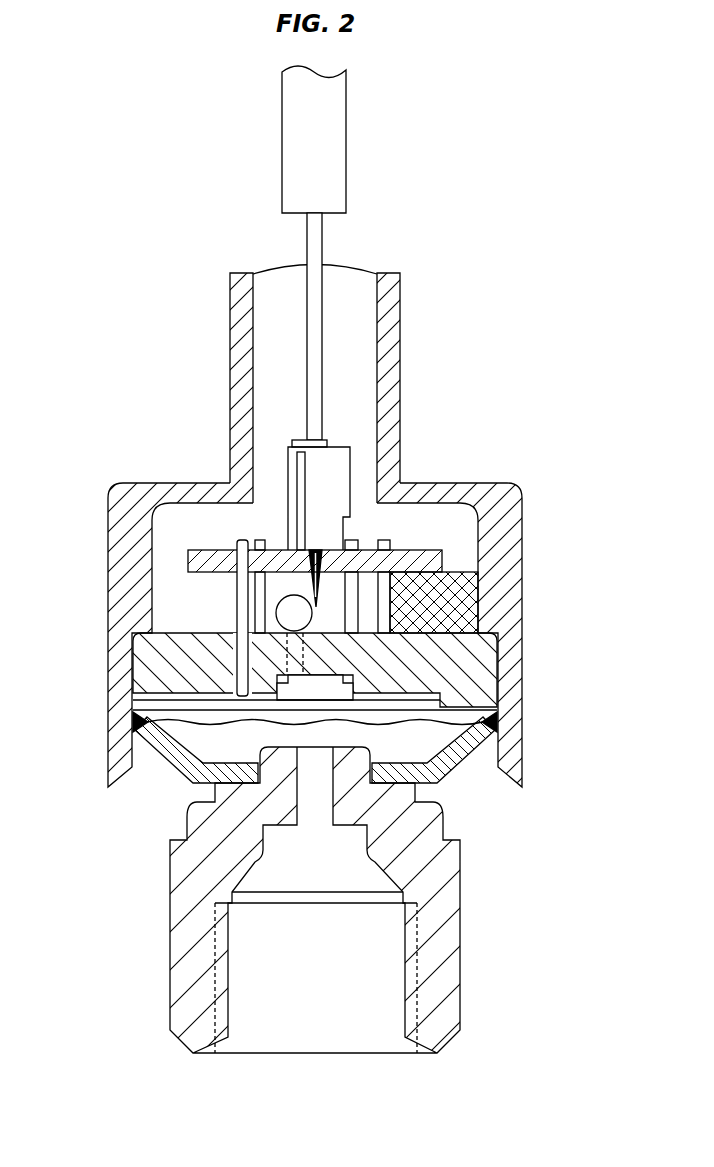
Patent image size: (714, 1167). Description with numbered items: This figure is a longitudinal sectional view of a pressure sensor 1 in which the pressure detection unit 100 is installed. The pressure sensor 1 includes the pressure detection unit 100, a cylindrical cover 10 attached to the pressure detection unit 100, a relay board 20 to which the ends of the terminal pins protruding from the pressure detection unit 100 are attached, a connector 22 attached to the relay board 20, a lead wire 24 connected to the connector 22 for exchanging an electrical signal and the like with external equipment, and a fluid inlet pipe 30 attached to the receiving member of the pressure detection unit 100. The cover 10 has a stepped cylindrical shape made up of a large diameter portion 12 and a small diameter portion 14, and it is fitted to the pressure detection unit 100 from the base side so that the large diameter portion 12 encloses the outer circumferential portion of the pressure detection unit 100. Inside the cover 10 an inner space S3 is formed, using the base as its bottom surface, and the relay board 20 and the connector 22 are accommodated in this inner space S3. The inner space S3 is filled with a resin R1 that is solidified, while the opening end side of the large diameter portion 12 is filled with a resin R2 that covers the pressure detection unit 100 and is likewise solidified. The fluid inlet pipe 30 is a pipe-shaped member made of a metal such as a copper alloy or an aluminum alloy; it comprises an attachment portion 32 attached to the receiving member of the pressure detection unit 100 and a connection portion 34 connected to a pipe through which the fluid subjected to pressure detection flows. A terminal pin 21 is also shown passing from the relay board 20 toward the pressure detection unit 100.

The pressure sensor 1 is at (488, 287).
The cover 10 is at (512, 546).
The large diameter portion 12 is at (118, 670).
The small diameter portion 14 is at (240, 335).
The relay board 20 is at (420, 558).
The terminal pin 21 is at (237, 543).
The connector 22 is at (293, 462).
The lead wire 24 is at (316, 236).
The fluid inlet pipe 30 is at (341, 922).
The attachment portion 32 is at (190, 774).
The connection portion 34 is at (392, 1012).
The pressure detection unit 100 is at (465, 755).
The resin R1 is at (272, 290).
The resin R2 is at (142, 772).
The inner space S3 is at (447, 518).